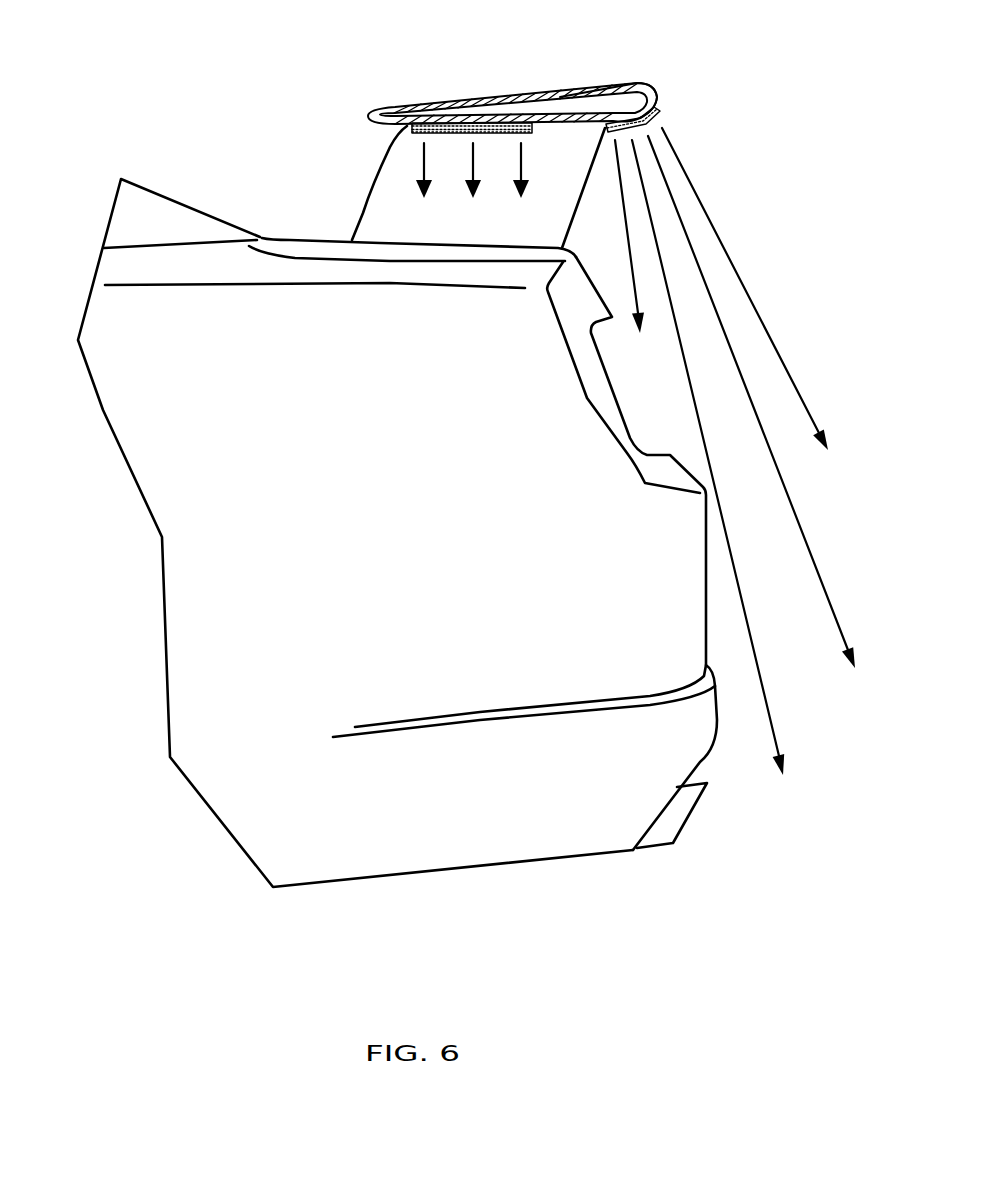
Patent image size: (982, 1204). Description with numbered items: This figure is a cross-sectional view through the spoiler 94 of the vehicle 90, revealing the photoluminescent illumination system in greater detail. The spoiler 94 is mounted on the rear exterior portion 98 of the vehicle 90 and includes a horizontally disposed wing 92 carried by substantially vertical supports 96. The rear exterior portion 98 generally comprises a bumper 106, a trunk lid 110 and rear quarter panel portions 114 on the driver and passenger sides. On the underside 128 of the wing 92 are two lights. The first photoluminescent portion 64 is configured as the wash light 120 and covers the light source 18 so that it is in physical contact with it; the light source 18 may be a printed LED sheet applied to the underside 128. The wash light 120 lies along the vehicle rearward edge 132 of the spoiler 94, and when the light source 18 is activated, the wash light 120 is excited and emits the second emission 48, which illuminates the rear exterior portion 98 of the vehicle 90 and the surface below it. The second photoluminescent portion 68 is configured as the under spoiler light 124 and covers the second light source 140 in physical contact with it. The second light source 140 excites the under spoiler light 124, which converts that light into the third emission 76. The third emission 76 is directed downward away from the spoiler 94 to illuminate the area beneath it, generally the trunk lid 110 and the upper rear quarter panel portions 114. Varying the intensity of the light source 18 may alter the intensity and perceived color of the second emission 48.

The light source 18 is at (627, 121).
The second emission 48 is at (688, 228).
The first photoluminescent portion 64 is at (698, 114).
The second photoluminescent portion 68 is at (472, 180).
The third emission 76 is at (523, 160).
The vehicle 90 is at (117, 583).
The wing 92 is at (547, 95).
The spoiler 94 is at (440, 92).
The vertical supports 96 is at (478, 187).
The rear exterior portion 98 is at (745, 529).
The bumper 106 is at (677, 608).
The trunk lid 110 is at (303, 243).
The rear quarter panel portions 114 is at (396, 533).
The wash light 120 is at (654, 118).
The under spoiler light 124 is at (487, 131).
The underside 128 is at (383, 136).
The vehicle rearward edge 132 is at (654, 93).
The second light source 140 is at (481, 124).